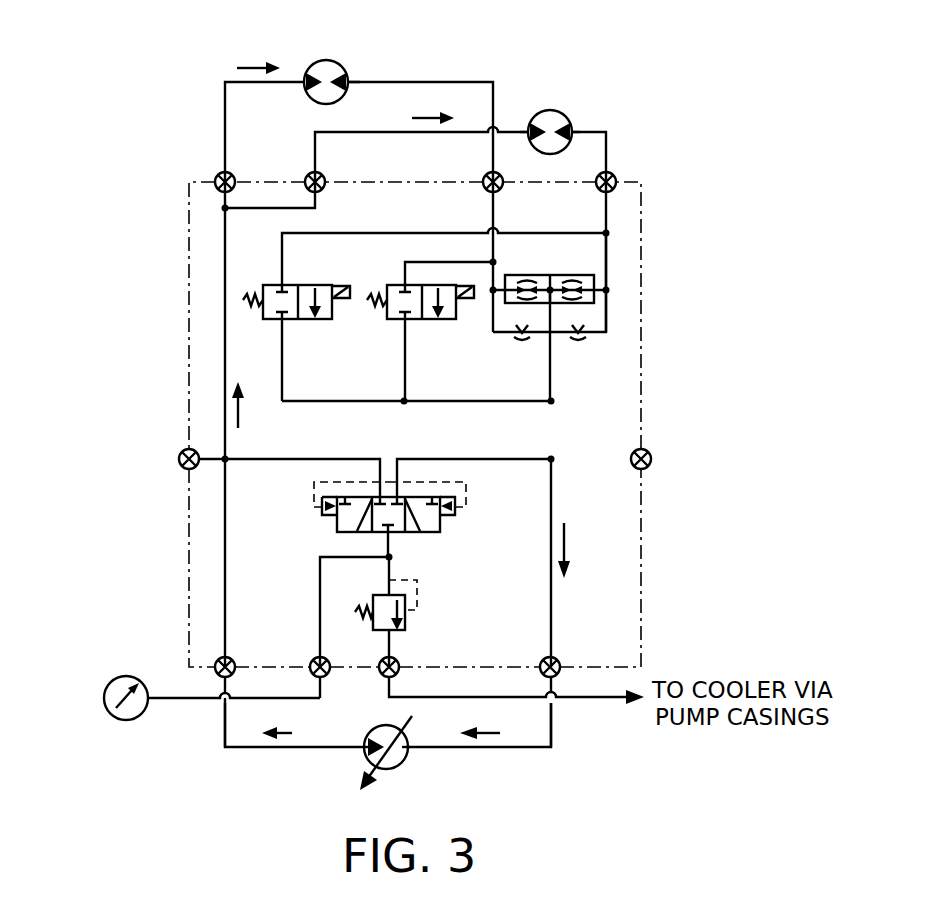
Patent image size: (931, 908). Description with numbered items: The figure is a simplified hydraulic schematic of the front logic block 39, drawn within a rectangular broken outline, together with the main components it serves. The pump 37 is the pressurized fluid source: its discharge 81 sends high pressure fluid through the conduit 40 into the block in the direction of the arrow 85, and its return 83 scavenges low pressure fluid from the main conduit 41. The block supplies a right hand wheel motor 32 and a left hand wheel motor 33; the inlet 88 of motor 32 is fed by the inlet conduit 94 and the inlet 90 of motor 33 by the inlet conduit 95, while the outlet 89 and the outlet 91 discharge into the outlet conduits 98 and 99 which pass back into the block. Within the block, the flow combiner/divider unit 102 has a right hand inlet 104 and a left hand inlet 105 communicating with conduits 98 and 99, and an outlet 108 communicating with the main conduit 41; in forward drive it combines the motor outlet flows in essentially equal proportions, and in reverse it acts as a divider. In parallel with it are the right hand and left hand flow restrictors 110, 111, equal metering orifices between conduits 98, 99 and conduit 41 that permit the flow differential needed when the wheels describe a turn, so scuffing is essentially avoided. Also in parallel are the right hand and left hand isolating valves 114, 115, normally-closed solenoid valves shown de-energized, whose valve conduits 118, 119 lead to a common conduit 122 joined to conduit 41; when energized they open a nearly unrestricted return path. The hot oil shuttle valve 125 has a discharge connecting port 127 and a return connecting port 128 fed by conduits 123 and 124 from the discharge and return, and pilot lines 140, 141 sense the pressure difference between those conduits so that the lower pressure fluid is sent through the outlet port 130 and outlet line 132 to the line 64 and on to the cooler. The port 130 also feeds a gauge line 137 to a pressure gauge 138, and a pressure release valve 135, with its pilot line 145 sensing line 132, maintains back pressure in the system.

The right hand wheel motor 32 is at (562, 112).
The left hand wheel motor 33 is at (334, 60).
The pump 37 is at (392, 770).
The front logic block 39 is at (189, 364).
The conduit 40 is at (225, 725).
The main conduit 41 is at (492, 748).
The line 64 is at (481, 698).
The discharge 81 is at (366, 750).
The return 83 is at (410, 743).
The arrow 85 is at (240, 410).
The fluid inlet 88 is at (528, 130).
The fluid outlet 89 is at (572, 128).
The fluid inlet 90 is at (310, 76).
The fluid outlet 91 is at (348, 82).
The inlet conduit 94 is at (352, 134).
The inlet conduit 95 is at (225, 128).
The outlet conduit 98 is at (606, 148).
The outlet conduit 99 is at (440, 82).
The flow combiner/divider unit 102 is at (605, 265).
The right hand inlet 104 is at (608, 283).
The left hand inlet 105 is at (493, 292).
The outlet 108 is at (555, 312).
The right hand flow restrictor 110 is at (578, 340).
The left hand flow restrictor 111 is at (522, 340).
The right hand isolating valve 114 is at (310, 285).
The left hand isolating valve 115 is at (397, 285).
The valve conduit 118 is at (392, 233).
The valve conduit 119 is at (450, 262).
The common conduit 122 is at (462, 403).
The conduit 123 is at (289, 461).
The conduit 124 is at (531, 458).
The hot oil shuttle valve 125 is at (462, 528).
The discharge connecting port 127 is at (380, 497).
The return connecting port 128 is at (398, 497).
The outlet port 130 is at (394, 540).
The outlet line 132 is at (389, 572).
The pressure release valve 135 is at (436, 617).
The gauge line 137 is at (320, 605).
The pressure gauge 138 is at (110, 716).
The pilot line 140 is at (314, 490).
The pilot line 141 is at (466, 486).
The pilot line 145 is at (417, 585).